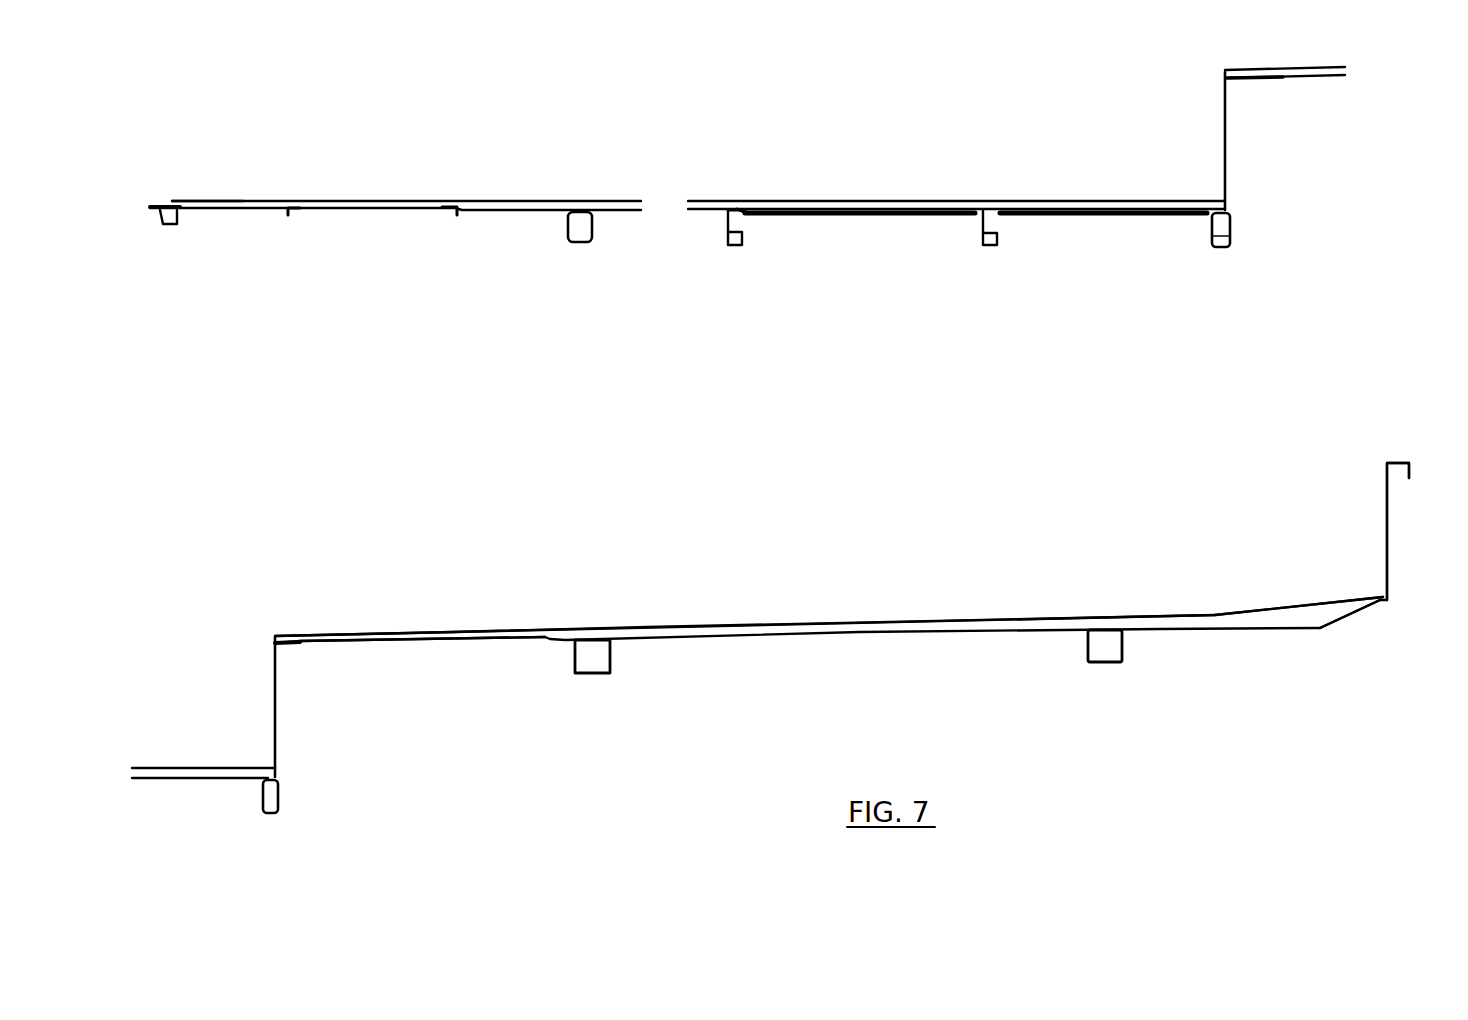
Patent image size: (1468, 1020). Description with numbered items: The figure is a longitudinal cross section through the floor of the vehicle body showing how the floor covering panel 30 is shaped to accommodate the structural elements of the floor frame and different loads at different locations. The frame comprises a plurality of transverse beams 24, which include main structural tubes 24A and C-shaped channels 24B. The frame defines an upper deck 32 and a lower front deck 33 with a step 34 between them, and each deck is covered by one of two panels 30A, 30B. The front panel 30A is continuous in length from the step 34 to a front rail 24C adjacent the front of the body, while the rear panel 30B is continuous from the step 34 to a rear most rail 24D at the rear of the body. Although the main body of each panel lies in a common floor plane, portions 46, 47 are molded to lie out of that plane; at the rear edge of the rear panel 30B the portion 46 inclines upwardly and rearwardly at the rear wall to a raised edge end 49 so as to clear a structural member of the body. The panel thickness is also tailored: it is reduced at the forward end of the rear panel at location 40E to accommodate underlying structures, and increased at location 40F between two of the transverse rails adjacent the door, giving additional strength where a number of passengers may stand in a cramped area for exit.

The transverse beam 24 is at (610, 673).
The main structural tube 24A is at (580, 242).
The C-shaped channel 24B is at (728, 246).
The front rail 24C is at (163, 225).
The rear most rail 24D is at (1380, 602).
The floor covering panel 30 is at (877, 620).
The front floor panel 30A is at (343, 210).
The rear floor panel 30B is at (648, 628).
The upper deck 32 is at (416, 640).
The lower front deck 33 is at (515, 205).
The step 34 is at (1225, 108).
The reduced thickness location 40E is at (453, 633).
The increased thickness location 40F is at (842, 202).
The inclined panel portion 46 is at (1315, 608).
The out-of-plane panel portion 47 is at (243, 198).
The raised edge end 49 is at (1377, 596).